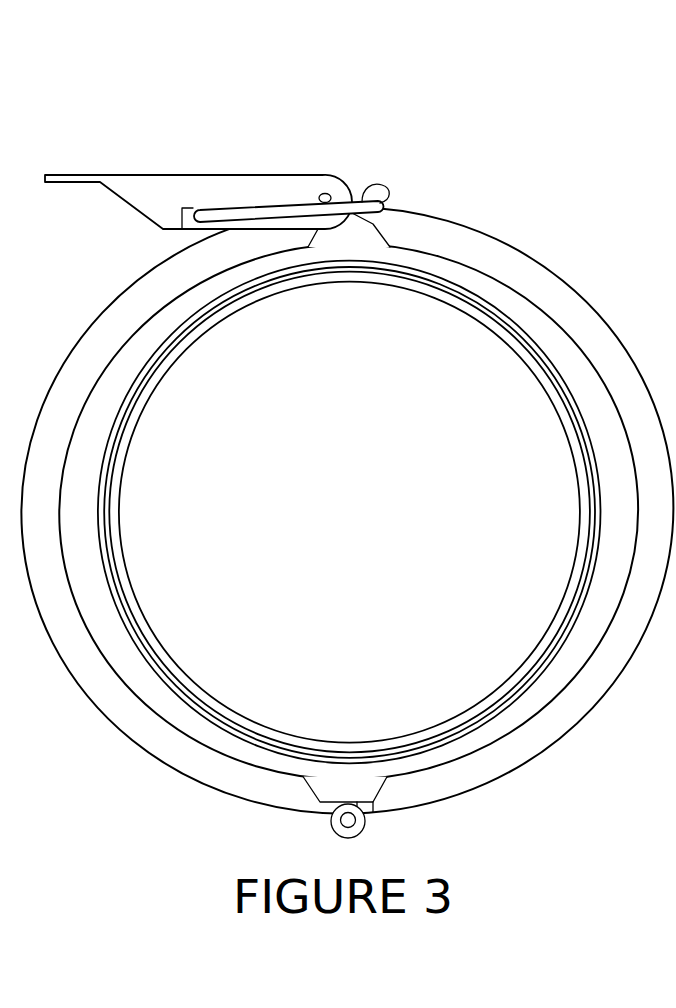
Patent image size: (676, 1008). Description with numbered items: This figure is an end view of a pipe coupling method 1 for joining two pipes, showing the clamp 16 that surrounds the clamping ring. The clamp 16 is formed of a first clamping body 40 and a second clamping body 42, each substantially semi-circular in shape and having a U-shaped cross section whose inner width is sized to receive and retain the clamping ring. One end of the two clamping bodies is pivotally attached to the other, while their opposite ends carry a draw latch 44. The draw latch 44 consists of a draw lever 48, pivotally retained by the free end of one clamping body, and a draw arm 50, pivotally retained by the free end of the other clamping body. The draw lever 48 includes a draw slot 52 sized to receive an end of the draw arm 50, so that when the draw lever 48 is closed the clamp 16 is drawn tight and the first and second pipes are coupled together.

The pipe coupling method 1 is at (338, 446).
The clamp 16 is at (505, 215).
The first clamping body 40 is at (205, 770).
The second clamping body 42 is at (507, 758).
The draw latch 44 is at (217, 127).
The draw lever 48 is at (168, 176).
The draw arm 50 is at (265, 205).
The draw slot 52 is at (187, 207).